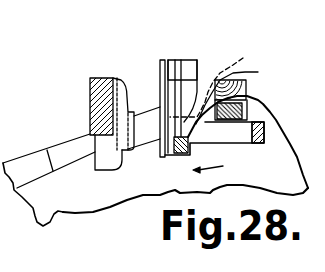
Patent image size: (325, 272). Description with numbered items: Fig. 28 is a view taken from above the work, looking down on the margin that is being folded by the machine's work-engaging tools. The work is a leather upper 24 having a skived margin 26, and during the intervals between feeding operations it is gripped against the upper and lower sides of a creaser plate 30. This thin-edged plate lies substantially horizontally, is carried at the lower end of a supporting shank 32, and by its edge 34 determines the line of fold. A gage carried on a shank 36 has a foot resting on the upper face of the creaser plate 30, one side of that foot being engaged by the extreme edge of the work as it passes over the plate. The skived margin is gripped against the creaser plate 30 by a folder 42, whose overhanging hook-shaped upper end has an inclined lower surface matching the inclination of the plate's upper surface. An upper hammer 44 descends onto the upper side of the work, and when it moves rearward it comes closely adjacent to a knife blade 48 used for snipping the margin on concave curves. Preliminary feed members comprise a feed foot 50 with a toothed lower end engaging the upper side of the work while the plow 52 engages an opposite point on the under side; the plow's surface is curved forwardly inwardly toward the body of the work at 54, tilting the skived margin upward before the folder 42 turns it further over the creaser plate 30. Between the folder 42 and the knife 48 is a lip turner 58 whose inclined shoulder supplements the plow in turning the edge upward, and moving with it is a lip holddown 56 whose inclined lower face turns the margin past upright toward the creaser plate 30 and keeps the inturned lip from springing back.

The leather upper 24 is at (65, 212).
The skived margin 26 is at (47, 150).
The creaser plate 30 is at (207, 134).
The supporting shank 32 is at (280, 129).
The edge 34 is at (218, 80).
The shank 36 is at (180, 153).
The folder 42 is at (171, 58).
The upper hammer 44 is at (98, 78).
The knife blade 48 is at (160, 102).
The feed foot 50 is at (246, 108).
The plow 52 is at (246, 88).
The forwardly inwardly curved portion of plow surface 54 is at (258, 72).
The lip holddown 56 is at (181, 90).
The lip turner 58 is at (190, 88).